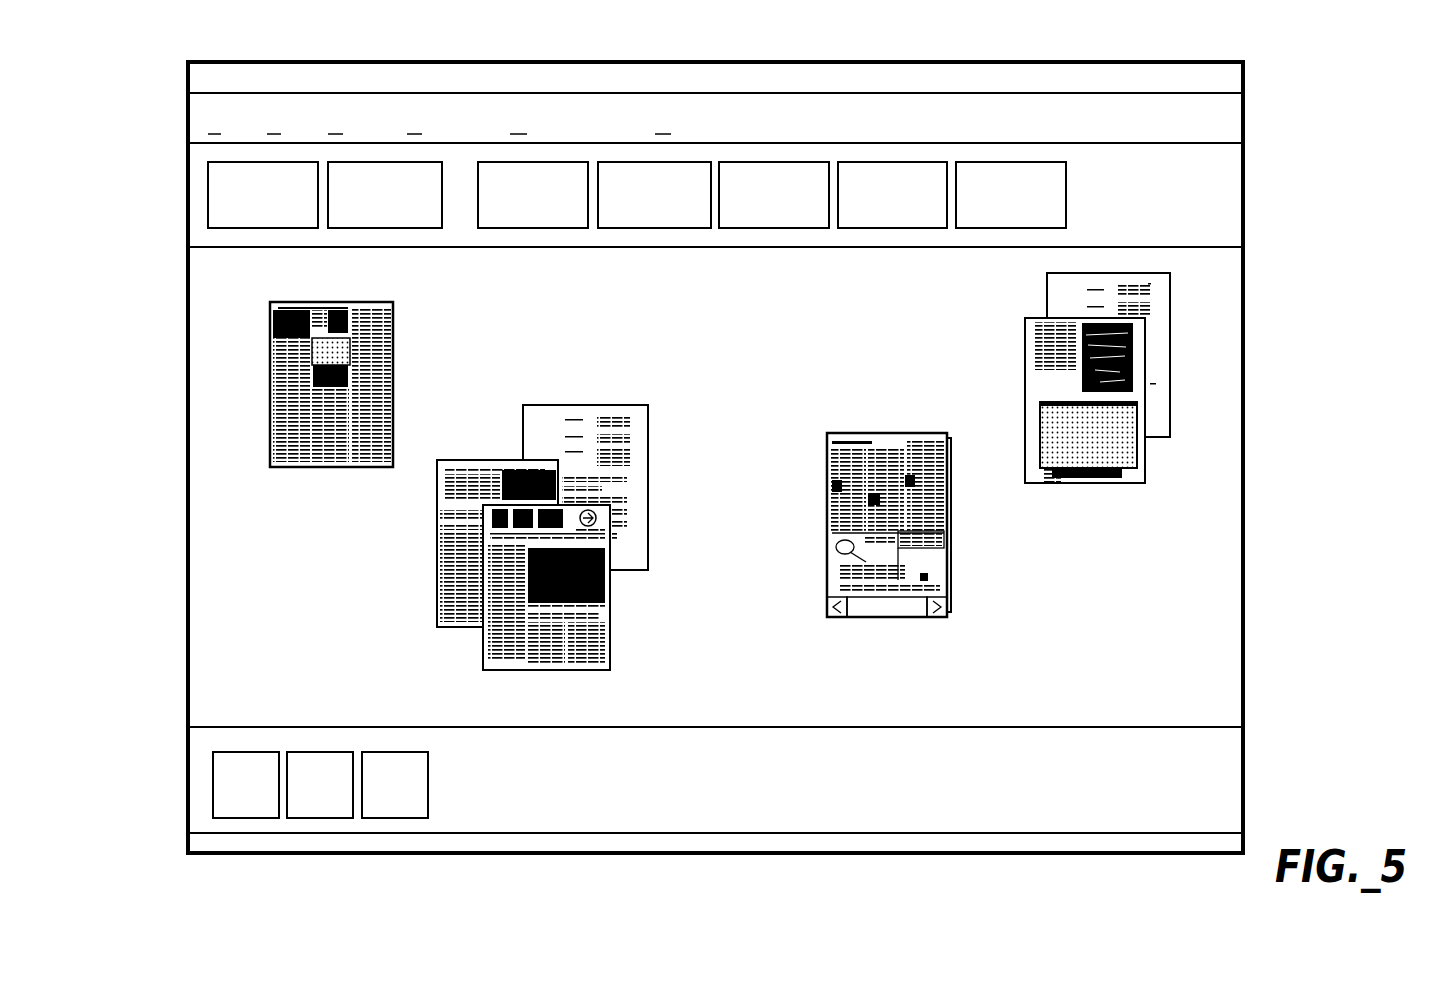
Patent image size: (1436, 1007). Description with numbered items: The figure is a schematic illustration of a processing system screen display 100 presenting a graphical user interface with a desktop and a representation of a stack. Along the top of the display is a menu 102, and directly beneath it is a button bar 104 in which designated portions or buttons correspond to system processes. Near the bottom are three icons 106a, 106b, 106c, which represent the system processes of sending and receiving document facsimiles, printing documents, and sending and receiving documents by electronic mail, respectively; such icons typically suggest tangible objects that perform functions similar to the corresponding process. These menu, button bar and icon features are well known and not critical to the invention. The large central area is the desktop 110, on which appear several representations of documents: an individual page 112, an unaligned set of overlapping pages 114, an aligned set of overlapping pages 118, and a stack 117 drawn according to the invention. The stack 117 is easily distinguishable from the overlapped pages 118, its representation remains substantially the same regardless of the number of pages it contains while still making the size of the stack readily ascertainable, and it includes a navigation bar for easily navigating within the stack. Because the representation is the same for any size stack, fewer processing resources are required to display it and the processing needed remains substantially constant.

The document management window 100 is at (185, 862).
The menu 102 is at (1250, 143).
The button bar 104 is at (1250, 245).
The icon 106a is at (233, 818).
The icon 106b is at (330, 818).
The icon 106c is at (407, 818).
The desktop 110 is at (1250, 734).
The individual page 112 is at (368, 300).
The unaligned set of overlapping pages 114 is at (622, 386).
The stack 117 is at (916, 414).
The aligned set of overlapping pages 118 is at (1010, 298).